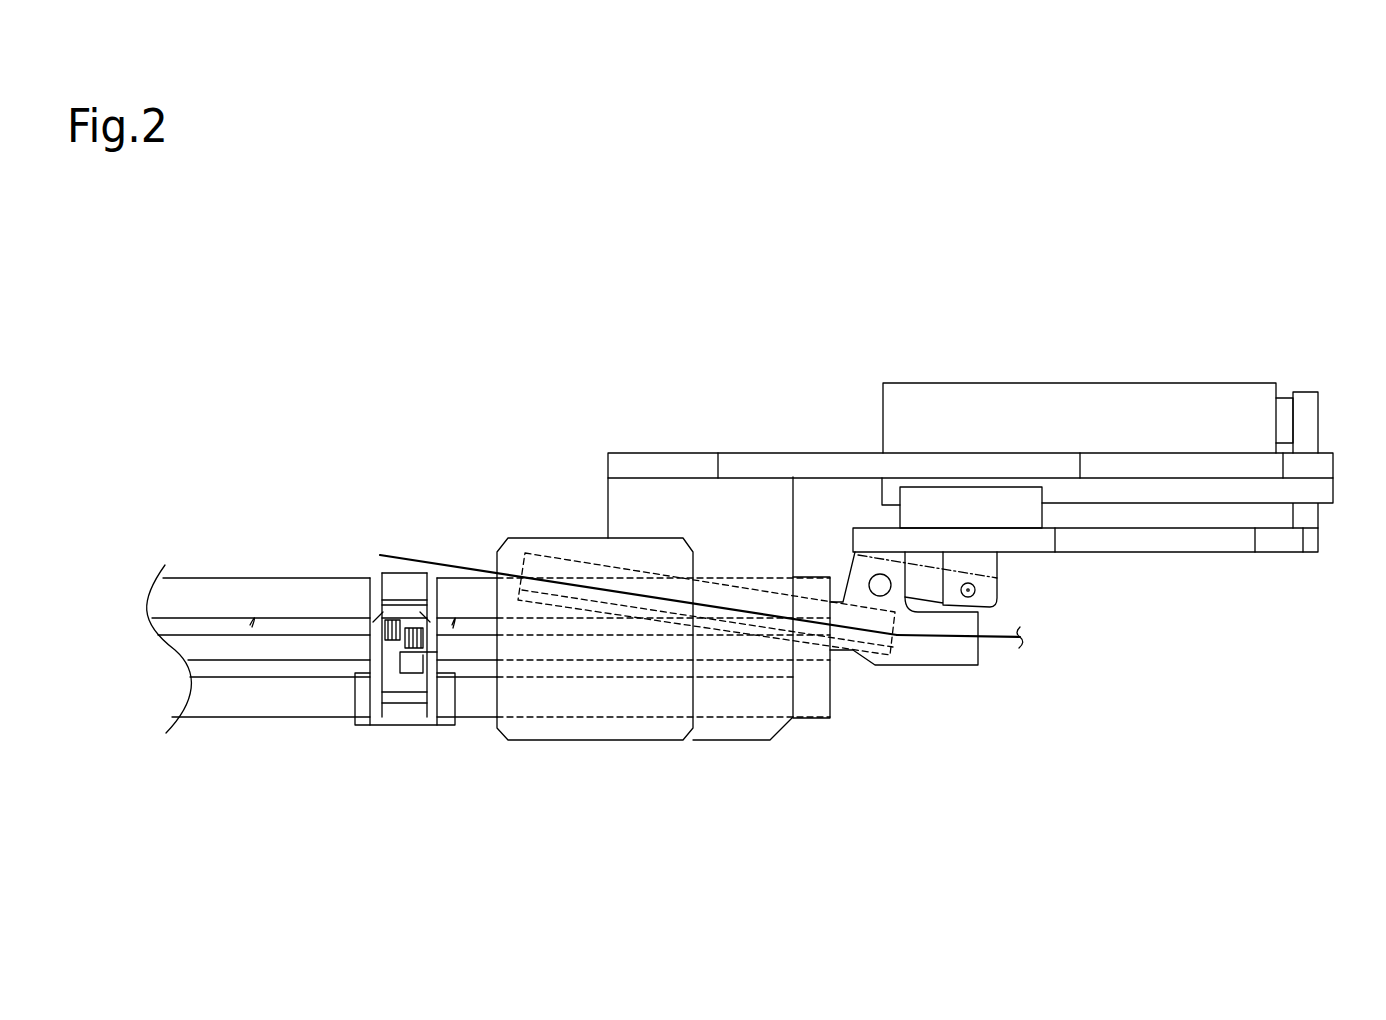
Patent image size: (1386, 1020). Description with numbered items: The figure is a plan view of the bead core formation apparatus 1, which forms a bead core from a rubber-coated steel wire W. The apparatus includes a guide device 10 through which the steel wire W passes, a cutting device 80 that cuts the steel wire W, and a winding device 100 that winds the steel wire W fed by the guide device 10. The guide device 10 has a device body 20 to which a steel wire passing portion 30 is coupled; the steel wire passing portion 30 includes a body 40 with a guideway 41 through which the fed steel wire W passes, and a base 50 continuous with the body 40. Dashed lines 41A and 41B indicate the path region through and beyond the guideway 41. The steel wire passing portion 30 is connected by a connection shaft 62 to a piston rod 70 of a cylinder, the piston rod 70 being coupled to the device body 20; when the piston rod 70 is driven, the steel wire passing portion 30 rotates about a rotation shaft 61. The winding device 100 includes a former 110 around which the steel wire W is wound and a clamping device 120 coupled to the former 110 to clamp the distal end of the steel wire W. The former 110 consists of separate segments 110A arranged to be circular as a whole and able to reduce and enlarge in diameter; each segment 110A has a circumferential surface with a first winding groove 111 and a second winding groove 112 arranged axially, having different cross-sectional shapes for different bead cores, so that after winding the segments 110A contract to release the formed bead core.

The bead core formation apparatus 1 is at (1278, 342).
The guide device 10 is at (1049, 712).
The device body 20 is at (1063, 540).
The steel wire passing portion 30 is at (847, 653).
The body 40 is at (617, 617).
The guideway 41 is at (753, 623).
The roller guide surface 41A is at (893, 650).
The sheet conveying path 41B is at (523, 556).
The base 50 is at (927, 560).
The rotation shaft 61 is at (880, 580).
The connection shaft 62 is at (976, 590).
The piston rod 70 is at (988, 562).
The cutting device 80 is at (757, 487).
The winding device 100 is at (333, 421).
The former 110 is at (328, 575).
The segments 110A is at (190, 585).
The first winding groove 111 is at (252, 627).
The second winding groove 112 is at (225, 672).
The clamping device 120 is at (402, 568).
The steel wire W is at (997, 641).